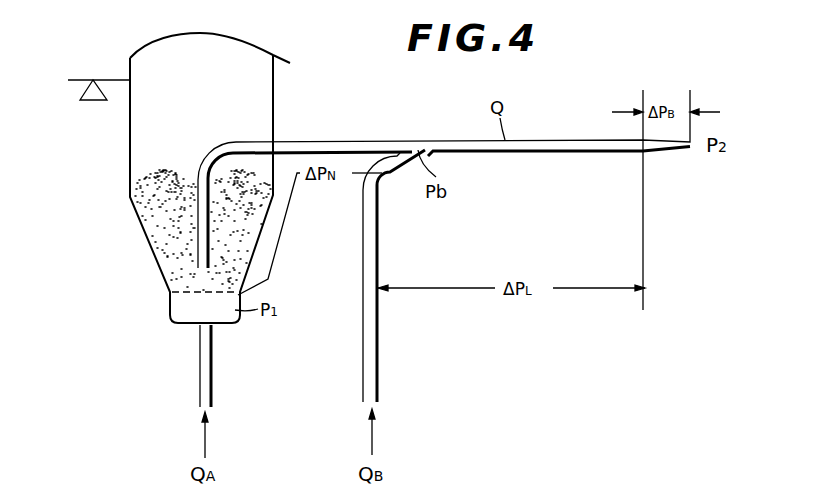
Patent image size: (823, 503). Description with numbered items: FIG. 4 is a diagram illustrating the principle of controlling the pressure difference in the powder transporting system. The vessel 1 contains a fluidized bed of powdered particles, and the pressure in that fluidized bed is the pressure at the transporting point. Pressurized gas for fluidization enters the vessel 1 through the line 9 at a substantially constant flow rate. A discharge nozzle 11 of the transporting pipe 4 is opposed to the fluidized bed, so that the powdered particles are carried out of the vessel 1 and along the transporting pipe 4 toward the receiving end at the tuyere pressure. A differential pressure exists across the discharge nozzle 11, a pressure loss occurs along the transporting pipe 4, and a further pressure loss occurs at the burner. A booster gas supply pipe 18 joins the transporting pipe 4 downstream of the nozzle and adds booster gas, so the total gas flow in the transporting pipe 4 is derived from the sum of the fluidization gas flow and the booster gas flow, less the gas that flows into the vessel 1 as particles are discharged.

The vessel 1 is at (290, 63).
The transporting pipe 4 is at (567, 138).
The line 9 is at (200, 362).
The discharge nozzle 11 is at (197, 267).
The booster gas supply pipe 18 is at (378, 234).